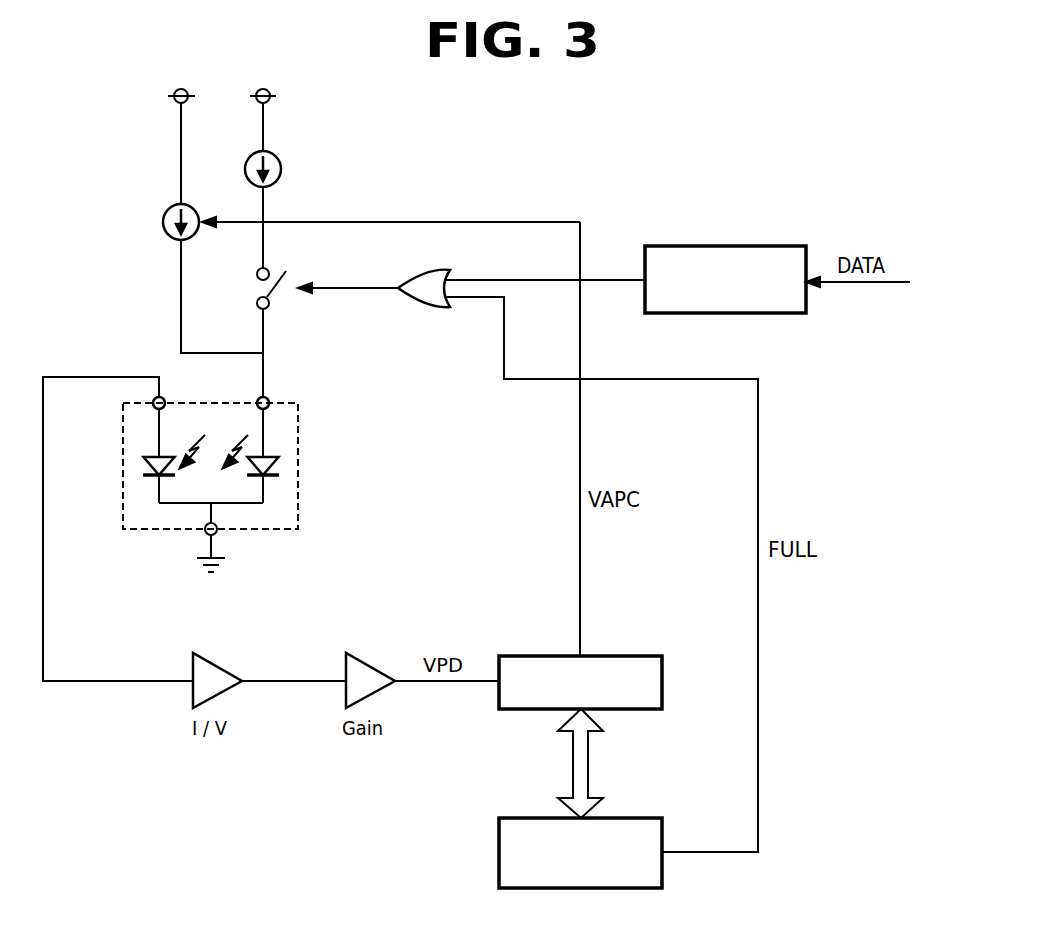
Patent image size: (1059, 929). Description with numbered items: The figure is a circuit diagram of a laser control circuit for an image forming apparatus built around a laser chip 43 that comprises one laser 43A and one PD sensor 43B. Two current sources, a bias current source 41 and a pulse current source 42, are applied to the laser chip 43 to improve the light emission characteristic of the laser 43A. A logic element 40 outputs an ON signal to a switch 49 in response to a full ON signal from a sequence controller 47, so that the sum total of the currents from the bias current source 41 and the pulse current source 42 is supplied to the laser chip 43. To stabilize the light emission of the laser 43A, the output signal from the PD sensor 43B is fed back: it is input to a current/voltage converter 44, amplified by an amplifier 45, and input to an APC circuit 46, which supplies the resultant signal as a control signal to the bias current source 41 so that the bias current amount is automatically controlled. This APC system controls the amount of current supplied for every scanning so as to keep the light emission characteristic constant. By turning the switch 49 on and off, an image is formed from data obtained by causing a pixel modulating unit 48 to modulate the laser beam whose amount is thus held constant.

The logic element 40 is at (447, 268).
The bias current source 41 is at (172, 205).
The pulse current source 42 is at (273, 153).
The laser chip 43 is at (302, 510).
The laser 43A is at (267, 453).
The PD sensor 43B is at (153, 453).
The current/voltage converter 44 is at (220, 662).
The amplifier 45 is at (372, 662).
The APC circuit 46 is at (637, 656).
The sequence controller 47 is at (637, 818).
The pixel modulating unit 48 is at (780, 246).
The switch 49 is at (260, 287).